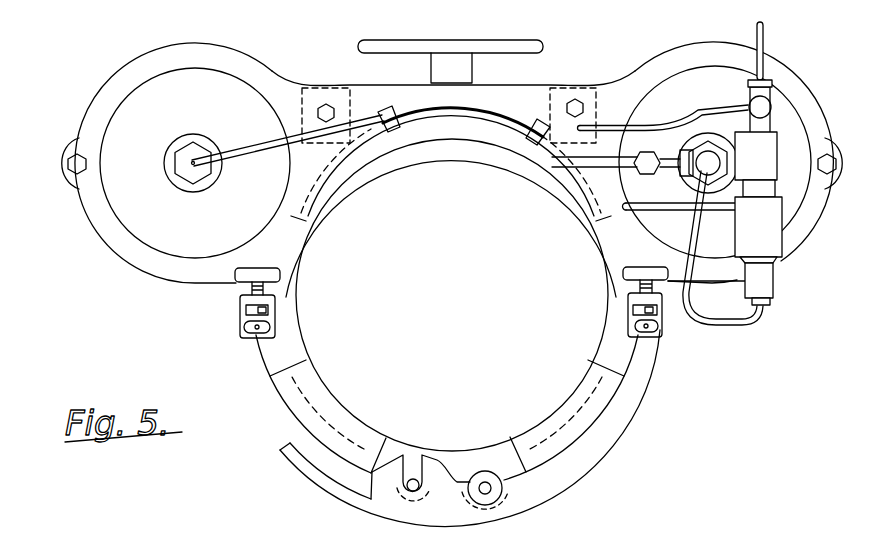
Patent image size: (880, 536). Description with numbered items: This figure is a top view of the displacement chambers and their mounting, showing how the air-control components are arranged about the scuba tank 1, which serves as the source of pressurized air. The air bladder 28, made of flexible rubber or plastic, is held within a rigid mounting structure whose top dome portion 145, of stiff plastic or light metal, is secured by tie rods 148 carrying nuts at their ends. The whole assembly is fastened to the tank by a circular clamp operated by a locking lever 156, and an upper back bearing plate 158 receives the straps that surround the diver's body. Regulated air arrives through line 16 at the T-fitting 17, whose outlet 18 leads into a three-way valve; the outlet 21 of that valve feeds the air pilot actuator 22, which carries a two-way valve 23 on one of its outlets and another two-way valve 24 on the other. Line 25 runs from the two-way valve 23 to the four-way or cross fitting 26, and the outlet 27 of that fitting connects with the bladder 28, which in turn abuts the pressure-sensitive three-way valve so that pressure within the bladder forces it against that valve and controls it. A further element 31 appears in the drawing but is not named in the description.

The scuba tank 1 is at (525, 247).
The line 16 is at (764, 44).
The T-fitting 17 is at (767, 100).
The outlet 18 is at (712, 106).
The outlet 21 is at (664, 207).
The air pilot actuator 22 is at (766, 237).
The two-way valve 23 is at (763, 283).
The two-way valve 24 is at (760, 150).
The line 25 is at (720, 323).
The four-way fitting 26 is at (742, 127).
The outlet 27 is at (497, 115).
The air bladder 28 is at (173, 163).
The coupling neck 31 is at (780, 186).
The top dome portion 145 is at (158, 233).
The tie rods 148 is at (72, 178).
The locking lever 156 is at (318, 482).
The upper back bearing plate 158 is at (380, 41).